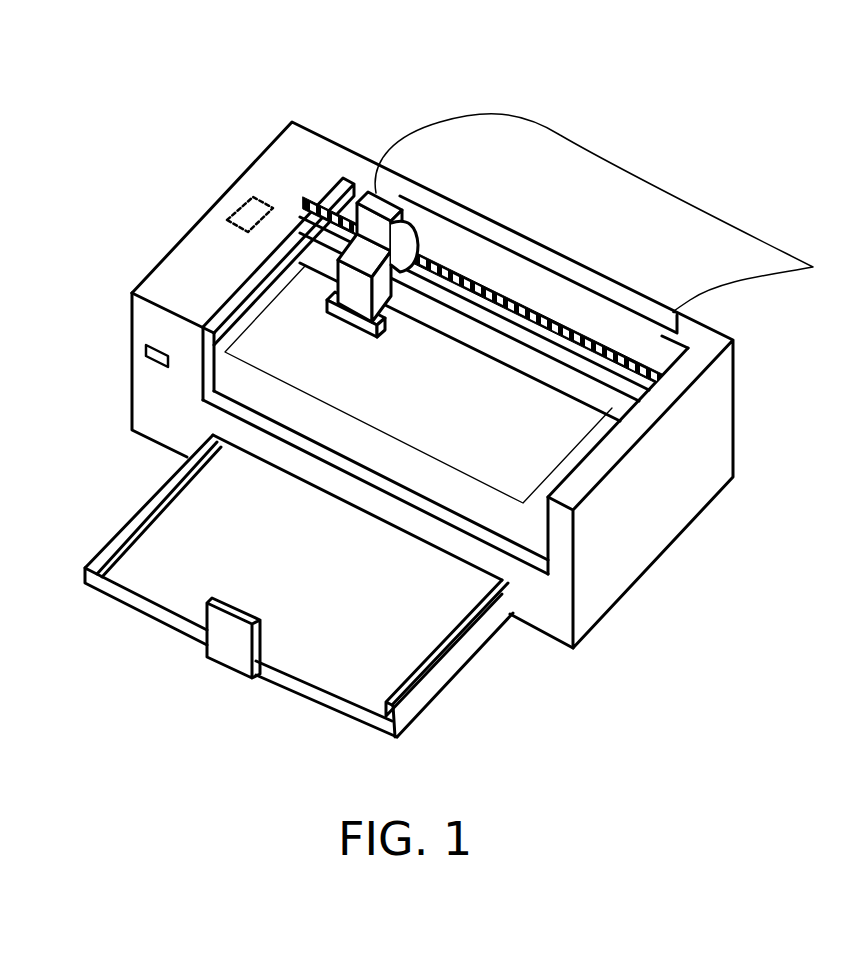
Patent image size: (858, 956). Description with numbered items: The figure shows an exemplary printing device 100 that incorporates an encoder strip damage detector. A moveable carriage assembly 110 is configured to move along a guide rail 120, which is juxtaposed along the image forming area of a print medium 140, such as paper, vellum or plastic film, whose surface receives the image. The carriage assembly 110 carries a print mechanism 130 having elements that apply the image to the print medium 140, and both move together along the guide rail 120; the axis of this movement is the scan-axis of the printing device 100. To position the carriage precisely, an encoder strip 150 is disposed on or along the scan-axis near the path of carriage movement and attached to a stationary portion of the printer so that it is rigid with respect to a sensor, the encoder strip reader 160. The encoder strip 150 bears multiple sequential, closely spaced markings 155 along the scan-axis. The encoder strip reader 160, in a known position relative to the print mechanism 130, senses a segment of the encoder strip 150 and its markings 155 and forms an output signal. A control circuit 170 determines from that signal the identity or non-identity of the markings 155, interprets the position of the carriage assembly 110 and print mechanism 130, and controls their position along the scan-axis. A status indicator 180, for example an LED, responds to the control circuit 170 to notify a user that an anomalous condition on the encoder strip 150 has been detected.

The printing device 100 is at (139, 179).
The carriage assembly 110 is at (360, 190).
The guide rail 120 is at (475, 312).
The print mechanism 130 is at (388, 284).
The print medium 140 is at (540, 126).
The encoder strip 150 is at (540, 313).
The markings 155 is at (670, 384).
The encoder strip reader 160 is at (420, 230).
The control circuit 170 is at (232, 218).
The status indicator 180 is at (148, 355).